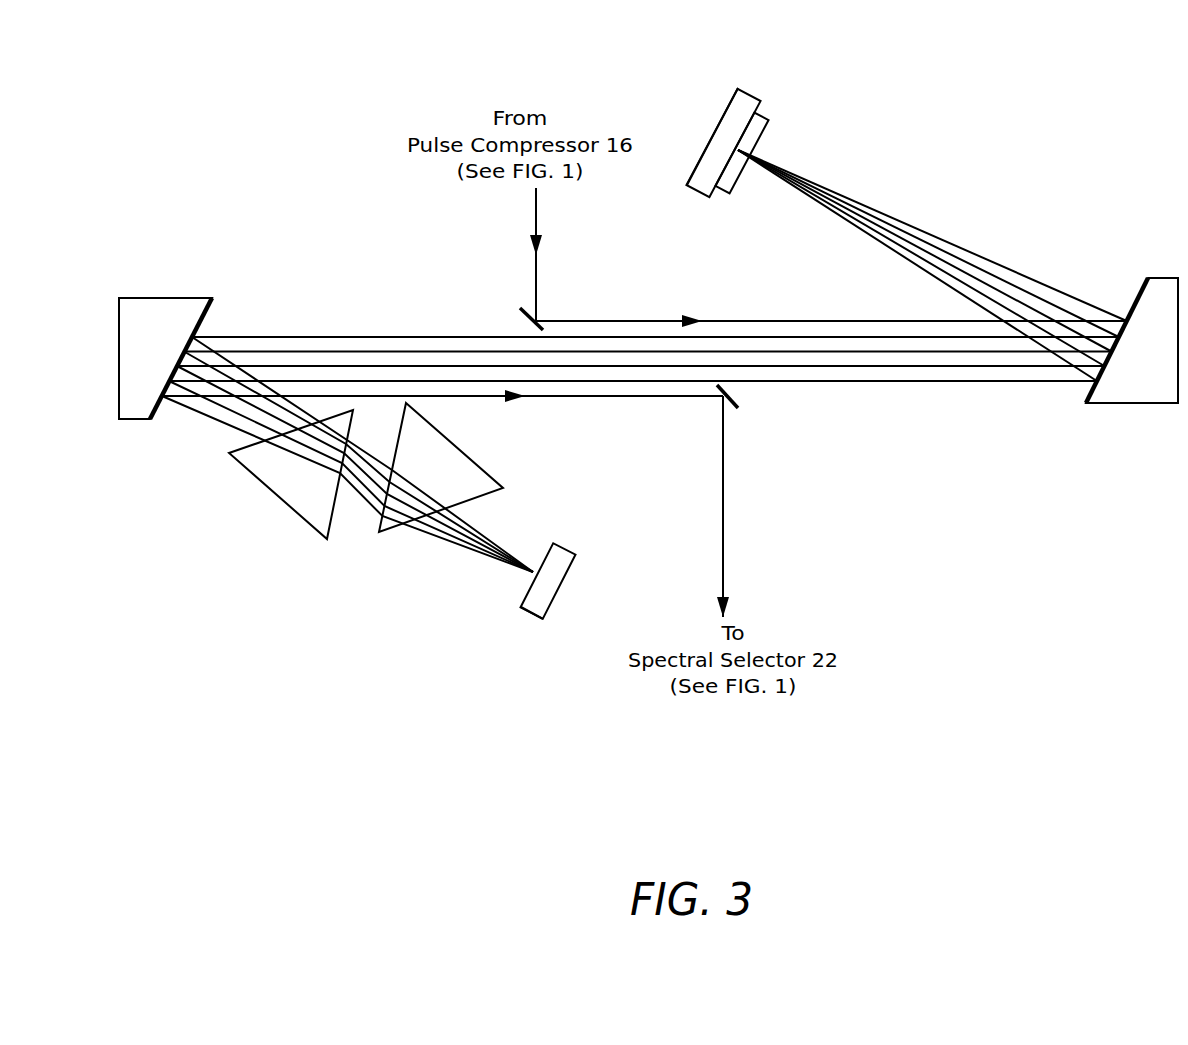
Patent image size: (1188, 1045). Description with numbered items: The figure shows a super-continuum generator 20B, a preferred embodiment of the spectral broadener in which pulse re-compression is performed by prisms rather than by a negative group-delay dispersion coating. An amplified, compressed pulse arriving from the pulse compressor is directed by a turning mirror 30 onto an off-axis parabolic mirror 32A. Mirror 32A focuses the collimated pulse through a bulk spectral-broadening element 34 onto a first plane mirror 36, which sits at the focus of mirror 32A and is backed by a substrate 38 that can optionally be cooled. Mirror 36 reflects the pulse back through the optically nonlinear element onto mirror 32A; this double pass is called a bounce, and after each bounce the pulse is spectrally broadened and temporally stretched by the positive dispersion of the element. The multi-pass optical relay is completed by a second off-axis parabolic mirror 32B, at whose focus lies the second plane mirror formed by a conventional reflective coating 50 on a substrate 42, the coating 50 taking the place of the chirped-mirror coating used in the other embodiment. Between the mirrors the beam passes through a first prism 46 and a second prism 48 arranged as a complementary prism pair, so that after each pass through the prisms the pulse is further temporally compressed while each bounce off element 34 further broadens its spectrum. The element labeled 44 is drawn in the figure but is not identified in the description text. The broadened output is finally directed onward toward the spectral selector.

The super-continuum generator 20B is at (978, 659).
The turning mirror 30 is at (520, 310).
The off-axis parabolic mirror 32A is at (1143, 290).
The off-axis parabolic mirror 32B is at (200, 307).
The spectral-broadening element 34 is at (753, 137).
The first plane mirror 36 is at (760, 102).
The substrate 38 is at (725, 110).
The substrate 42 is at (570, 568).
The output fold mirror 44 is at (737, 402).
The prism 46 is at (262, 478).
The prism 48 is at (472, 500).
The conventional reflective coating 50 is at (525, 595).